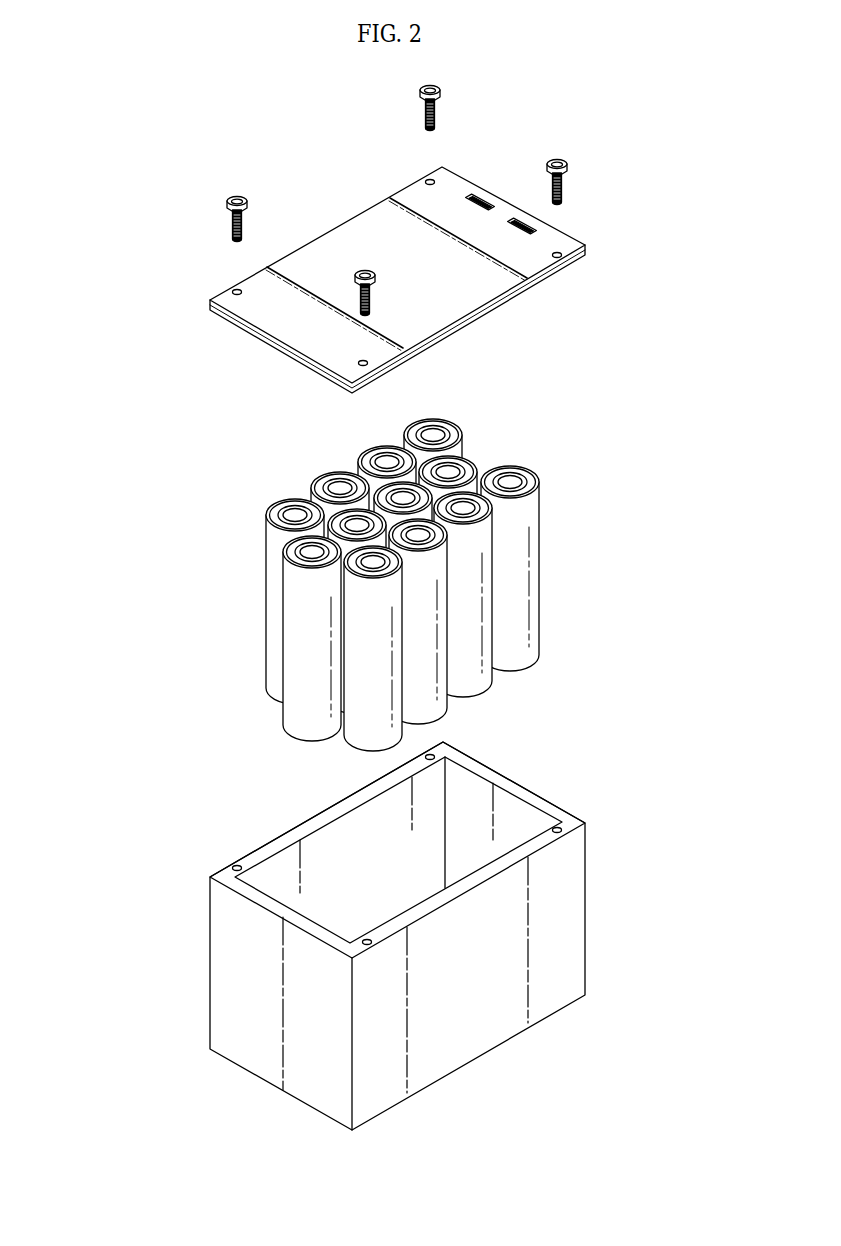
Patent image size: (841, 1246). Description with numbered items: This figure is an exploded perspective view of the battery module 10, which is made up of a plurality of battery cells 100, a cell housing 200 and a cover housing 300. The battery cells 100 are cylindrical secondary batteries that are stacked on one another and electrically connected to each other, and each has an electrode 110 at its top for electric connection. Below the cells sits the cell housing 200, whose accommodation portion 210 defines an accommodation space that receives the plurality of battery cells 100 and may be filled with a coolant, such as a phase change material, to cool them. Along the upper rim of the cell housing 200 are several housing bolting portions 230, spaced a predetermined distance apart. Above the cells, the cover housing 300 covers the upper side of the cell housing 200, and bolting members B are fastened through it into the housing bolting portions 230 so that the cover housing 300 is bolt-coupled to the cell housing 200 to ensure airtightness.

The battery module 10 is at (126, 201).
The bolting member B is at (563, 161).
The cover housing 300 is at (604, 244).
The battery cell 100 is at (577, 521).
The electrode 110 is at (511, 482).
The cell housing 200 is at (610, 856).
The accommodation portion 210 is at (511, 822).
The housing bolting portion 230 is at (558, 829).